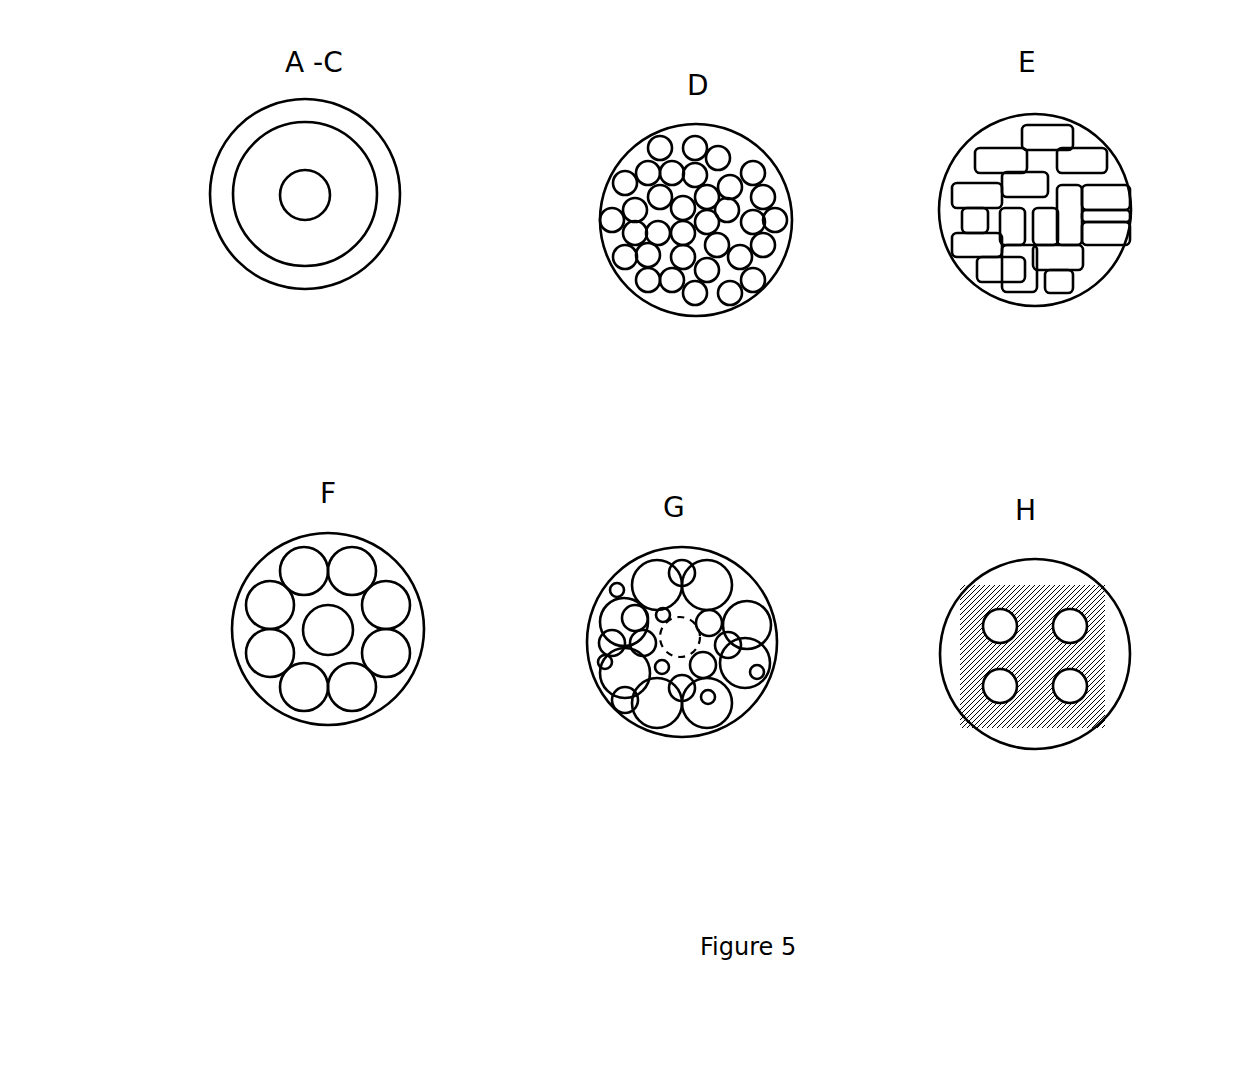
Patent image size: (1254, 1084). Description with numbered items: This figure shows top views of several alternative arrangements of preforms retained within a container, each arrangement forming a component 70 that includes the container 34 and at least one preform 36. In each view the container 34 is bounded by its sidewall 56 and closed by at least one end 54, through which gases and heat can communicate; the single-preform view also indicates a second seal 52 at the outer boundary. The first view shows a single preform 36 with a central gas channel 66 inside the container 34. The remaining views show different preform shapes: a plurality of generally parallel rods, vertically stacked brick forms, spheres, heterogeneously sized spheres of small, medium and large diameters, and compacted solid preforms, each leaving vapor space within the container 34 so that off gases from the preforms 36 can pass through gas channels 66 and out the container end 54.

The component 70 is at (198, 138).
The container 34 is at (398, 217).
The preform 36 is at (280, 240).
The second seal 52 is at (210, 193).
The at least one end (of container) 54 is at (222, 222).
The sidewall (of container) 56 is at (723, 317).
The gas channel/at least one opening 66 is at (353, 133).